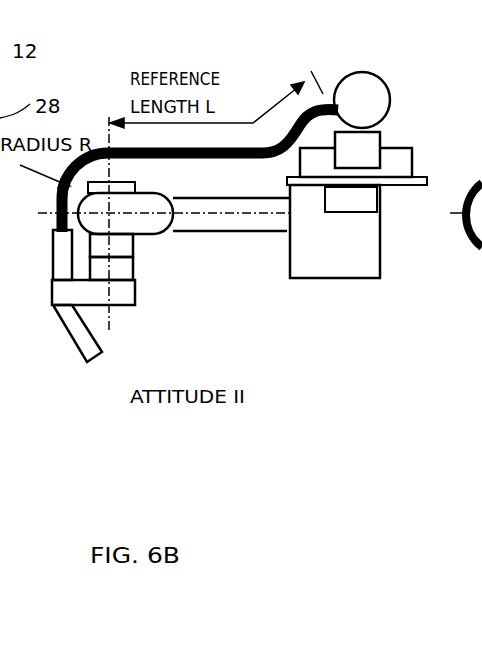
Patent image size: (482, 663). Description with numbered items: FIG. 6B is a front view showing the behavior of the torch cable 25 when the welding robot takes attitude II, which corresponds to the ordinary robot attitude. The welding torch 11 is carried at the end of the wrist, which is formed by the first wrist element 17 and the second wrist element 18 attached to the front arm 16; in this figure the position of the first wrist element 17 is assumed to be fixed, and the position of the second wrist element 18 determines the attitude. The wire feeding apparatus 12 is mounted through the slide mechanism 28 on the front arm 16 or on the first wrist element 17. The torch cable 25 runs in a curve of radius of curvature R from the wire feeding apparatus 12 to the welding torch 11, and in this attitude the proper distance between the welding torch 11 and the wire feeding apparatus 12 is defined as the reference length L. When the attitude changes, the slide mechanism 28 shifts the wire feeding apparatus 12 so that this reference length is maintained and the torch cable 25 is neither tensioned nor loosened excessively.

The welding torch 11 is at (102, 350).
The wire feeding apparatus 12 is at (380, 77).
The front arm 16 is at (358, 248).
The first wrist element 17 is at (148, 238).
The second wrist element 18 is at (135, 293).
The torch cable 25 is at (158, 160).
The slide mechanism 28 is at (358, 153).